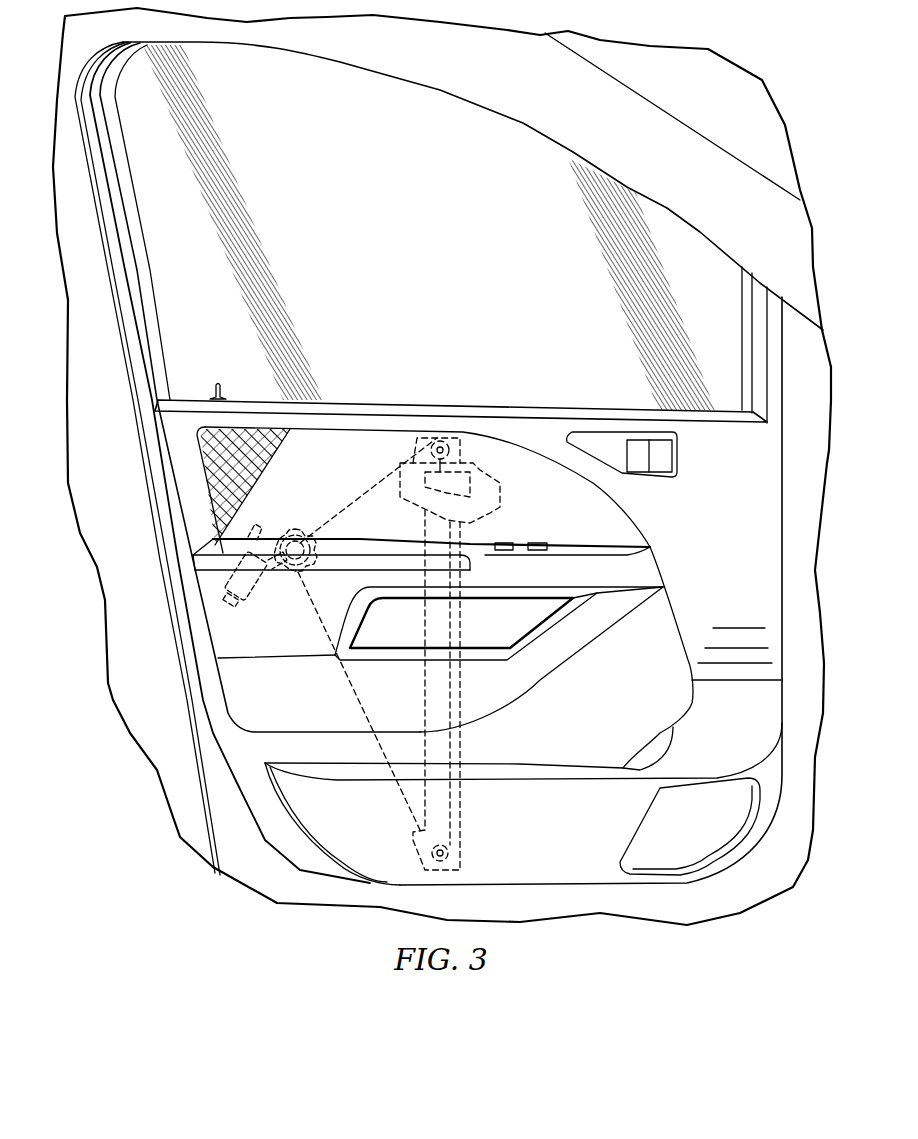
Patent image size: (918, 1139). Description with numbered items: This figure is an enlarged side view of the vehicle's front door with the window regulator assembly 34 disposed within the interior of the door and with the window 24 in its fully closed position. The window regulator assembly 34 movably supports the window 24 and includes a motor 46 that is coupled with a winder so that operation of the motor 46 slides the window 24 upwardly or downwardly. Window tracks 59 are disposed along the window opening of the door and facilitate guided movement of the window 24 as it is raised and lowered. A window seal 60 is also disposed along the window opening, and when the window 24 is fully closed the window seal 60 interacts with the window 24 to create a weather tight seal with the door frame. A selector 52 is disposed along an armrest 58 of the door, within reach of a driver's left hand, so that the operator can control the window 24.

The window 24 is at (440, 129).
The window regulator assembly 34 is at (472, 815).
The motor 46 is at (294, 500).
The selector 52 is at (540, 533).
The armrest 58 is at (232, 540).
The window tracks 59 is at (138, 267).
The window seal 60 is at (299, 62).